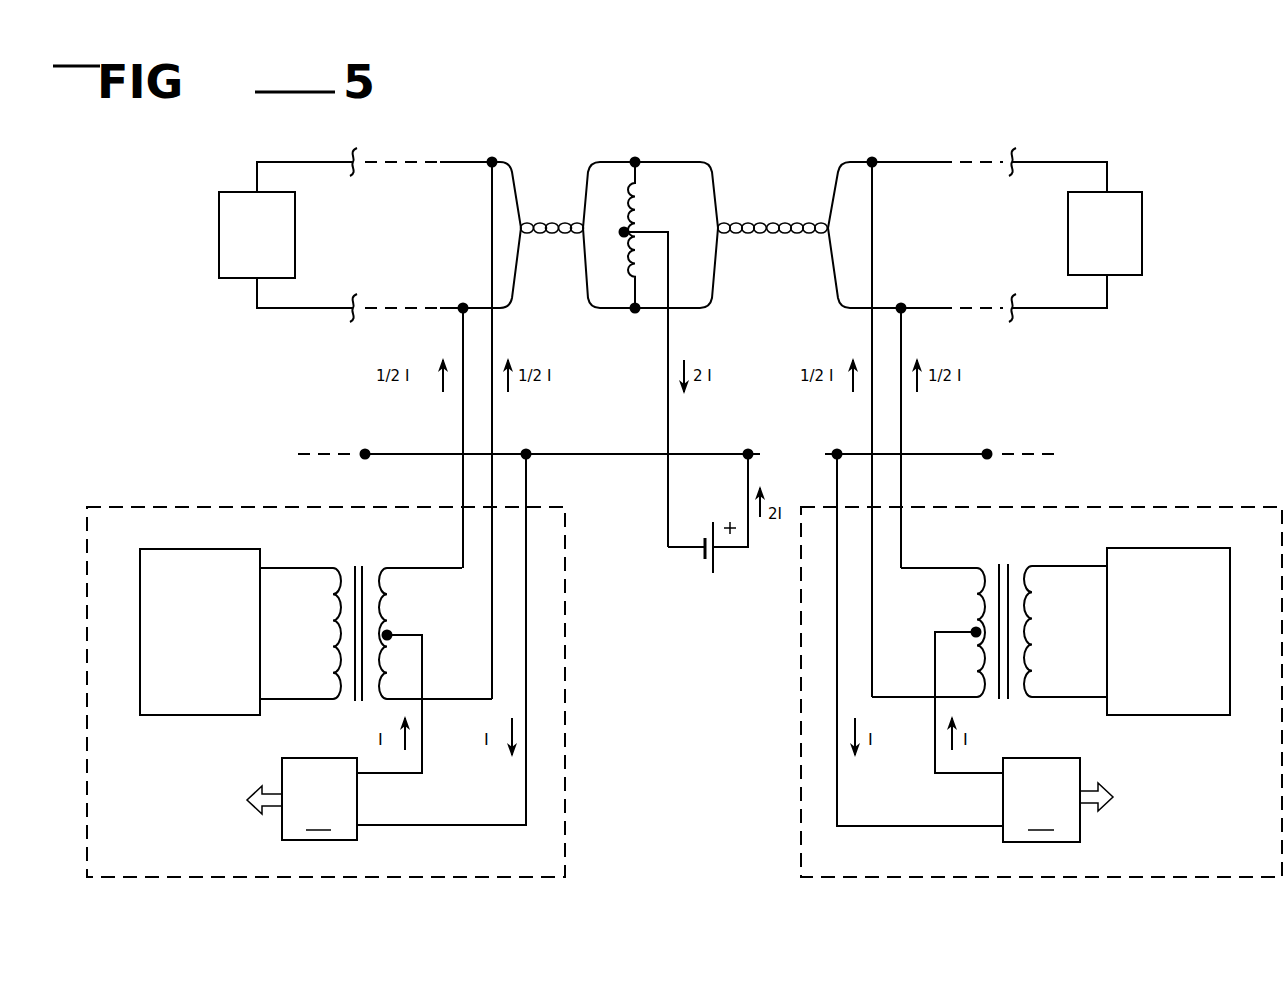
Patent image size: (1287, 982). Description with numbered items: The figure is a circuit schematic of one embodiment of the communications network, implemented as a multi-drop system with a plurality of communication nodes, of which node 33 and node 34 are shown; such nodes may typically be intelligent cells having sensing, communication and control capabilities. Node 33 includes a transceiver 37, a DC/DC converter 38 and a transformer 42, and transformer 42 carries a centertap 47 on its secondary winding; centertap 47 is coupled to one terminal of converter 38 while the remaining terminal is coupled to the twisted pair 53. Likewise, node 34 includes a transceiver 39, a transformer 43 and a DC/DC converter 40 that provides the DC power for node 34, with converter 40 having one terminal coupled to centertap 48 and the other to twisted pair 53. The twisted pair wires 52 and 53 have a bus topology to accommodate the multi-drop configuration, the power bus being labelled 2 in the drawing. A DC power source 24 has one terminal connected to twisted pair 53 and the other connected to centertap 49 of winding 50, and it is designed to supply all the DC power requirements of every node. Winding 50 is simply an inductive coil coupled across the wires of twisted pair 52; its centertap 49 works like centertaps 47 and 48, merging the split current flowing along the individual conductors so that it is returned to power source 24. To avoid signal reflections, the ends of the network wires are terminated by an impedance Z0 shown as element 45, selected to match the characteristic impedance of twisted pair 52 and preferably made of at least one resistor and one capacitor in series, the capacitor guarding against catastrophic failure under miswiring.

The DC power bus 2 is at (780, 466).
The DC power source 24 is at (709, 527).
The node 33 is at (210, 880).
The node 34 is at (1038, 880).
The transceiver 37 is at (184, 692).
The DC/DC converter 38 is at (244, 799).
The transceiver 39 is at (1156, 692).
The DC/DC converter 40 is at (1098, 800).
The transformer 42 is at (362, 565).
The transformer 43 is at (1003, 565).
The terminating impedance element 45 is at (216, 262).
The centertap 47 is at (390, 632).
The centertap 48 is at (973, 630).
The centertap 49 is at (620, 232).
The winding 50 is at (624, 185).
The twisted pair 52 is at (773, 228).
The twisted pair 53 is at (812, 455).